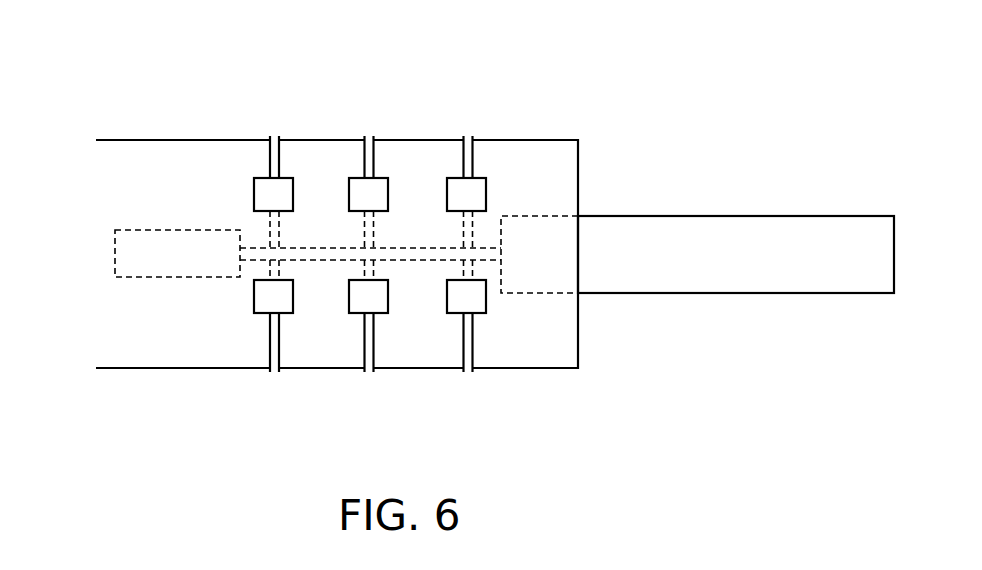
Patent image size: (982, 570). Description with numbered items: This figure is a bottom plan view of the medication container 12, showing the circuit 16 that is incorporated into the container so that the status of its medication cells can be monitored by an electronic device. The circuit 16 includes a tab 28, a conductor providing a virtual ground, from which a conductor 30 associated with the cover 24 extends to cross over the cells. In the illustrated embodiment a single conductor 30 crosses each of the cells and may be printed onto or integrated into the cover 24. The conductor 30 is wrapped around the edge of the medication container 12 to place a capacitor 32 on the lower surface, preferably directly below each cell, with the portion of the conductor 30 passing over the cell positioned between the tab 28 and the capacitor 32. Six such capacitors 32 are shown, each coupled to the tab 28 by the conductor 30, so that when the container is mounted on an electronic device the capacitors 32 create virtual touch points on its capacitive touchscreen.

The medication container 12 is at (118, 110).
The circuit 16 is at (263, 354).
The cover 24 is at (346, 317).
The tab 28 is at (670, 220).
The conductor 30 is at (273, 137).
The capacitor 32 is at (254, 185).